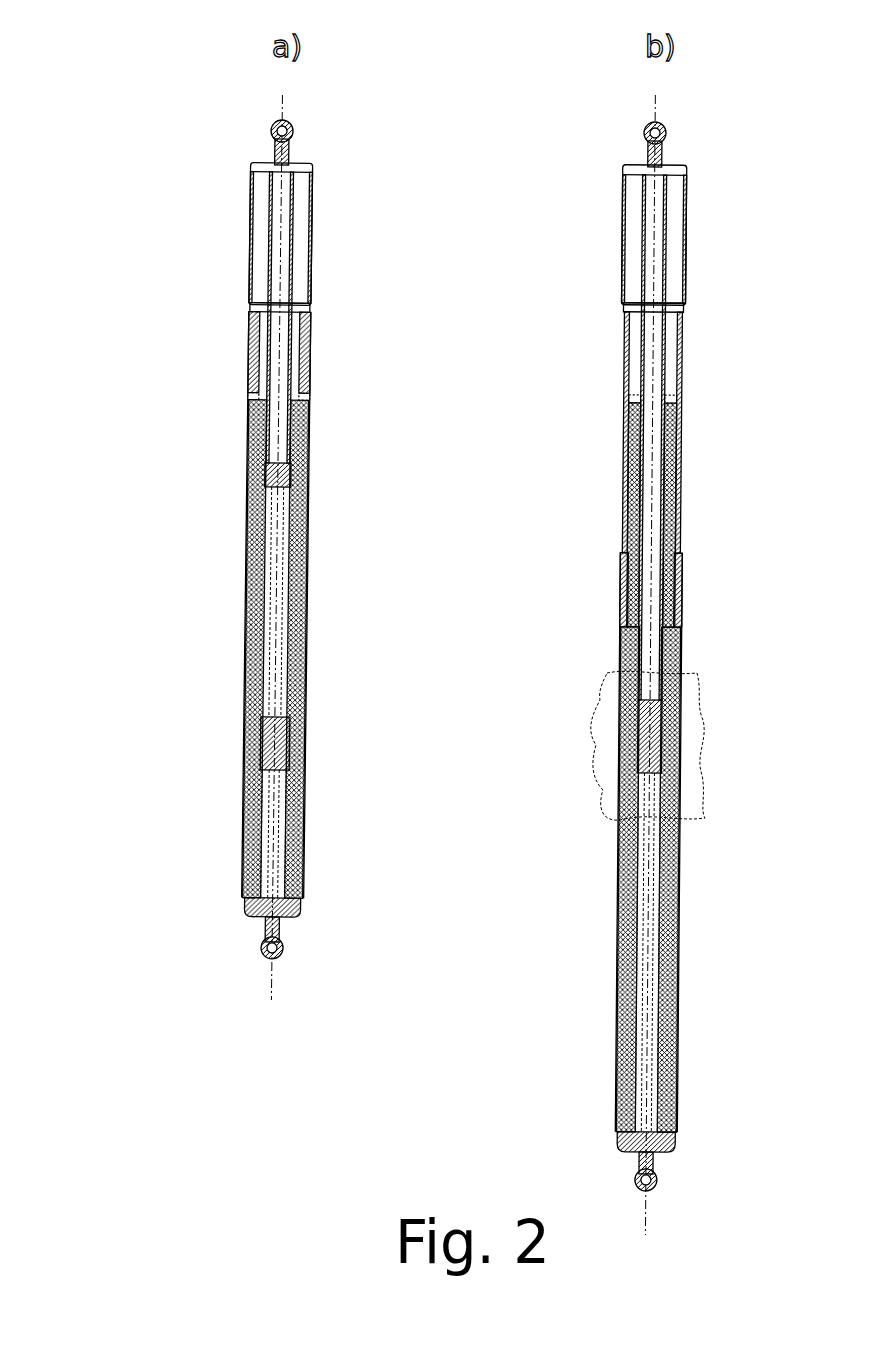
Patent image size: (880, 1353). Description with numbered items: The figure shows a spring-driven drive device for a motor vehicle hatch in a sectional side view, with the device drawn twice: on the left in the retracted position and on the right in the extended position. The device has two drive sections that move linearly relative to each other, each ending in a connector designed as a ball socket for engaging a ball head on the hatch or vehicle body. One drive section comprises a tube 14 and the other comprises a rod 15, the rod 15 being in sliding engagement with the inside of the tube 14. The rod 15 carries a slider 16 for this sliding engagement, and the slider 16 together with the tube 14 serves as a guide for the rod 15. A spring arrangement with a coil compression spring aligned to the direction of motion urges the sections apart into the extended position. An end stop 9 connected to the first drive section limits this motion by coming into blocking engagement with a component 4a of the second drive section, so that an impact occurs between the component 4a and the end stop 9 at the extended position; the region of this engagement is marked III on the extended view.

The component of the second drive section 4a is at (360, 462).
The end stop 9 is at (306, 745).
The tube 14 is at (680, 368).
The rod 15 is at (656, 957).
The slider 16 is at (292, 474).
The detail view region III is at (690, 697).